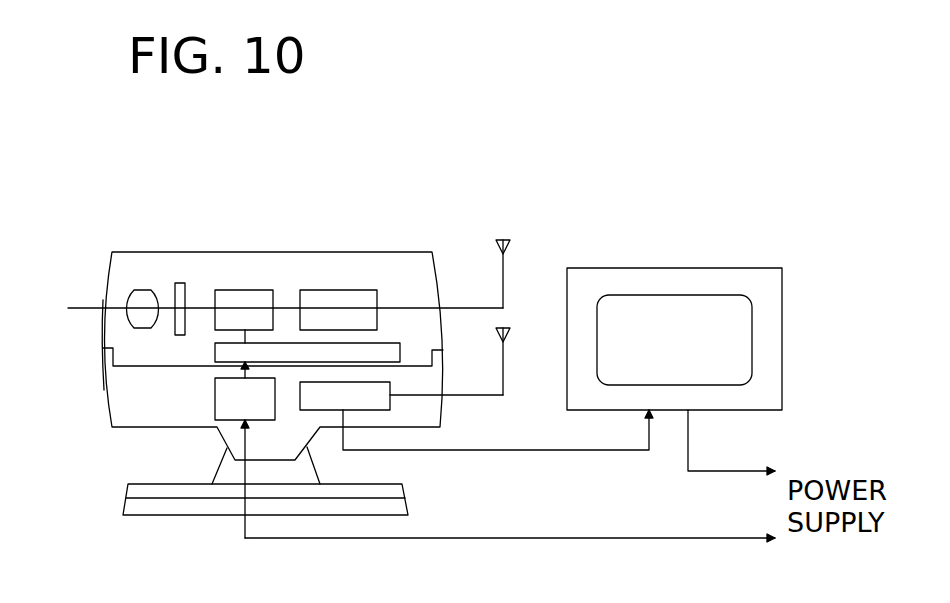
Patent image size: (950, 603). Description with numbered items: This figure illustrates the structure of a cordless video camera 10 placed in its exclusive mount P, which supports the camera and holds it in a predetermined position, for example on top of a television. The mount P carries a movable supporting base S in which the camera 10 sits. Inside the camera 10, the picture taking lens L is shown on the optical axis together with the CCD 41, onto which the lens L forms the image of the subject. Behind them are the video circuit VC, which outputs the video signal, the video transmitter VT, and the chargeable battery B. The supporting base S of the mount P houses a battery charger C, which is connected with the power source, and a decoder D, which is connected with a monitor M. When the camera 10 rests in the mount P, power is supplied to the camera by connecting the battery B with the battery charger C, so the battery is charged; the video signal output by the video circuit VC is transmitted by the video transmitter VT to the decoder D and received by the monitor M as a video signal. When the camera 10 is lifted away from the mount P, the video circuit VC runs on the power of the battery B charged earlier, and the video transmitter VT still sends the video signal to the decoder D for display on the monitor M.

The video camera 10 is at (105, 273).
The supporting base S is at (104, 383).
The picture taking lens L is at (147, 290).
The CCD 41 is at (178, 283).
The video circuit VC is at (244, 290).
The video transmitter VT is at (339, 290).
The chargeable battery B is at (387, 343).
The battery charger C is at (215, 392).
The decoder D is at (377, 410).
The monitor M is at (640, 270).
The mount P is at (163, 515).